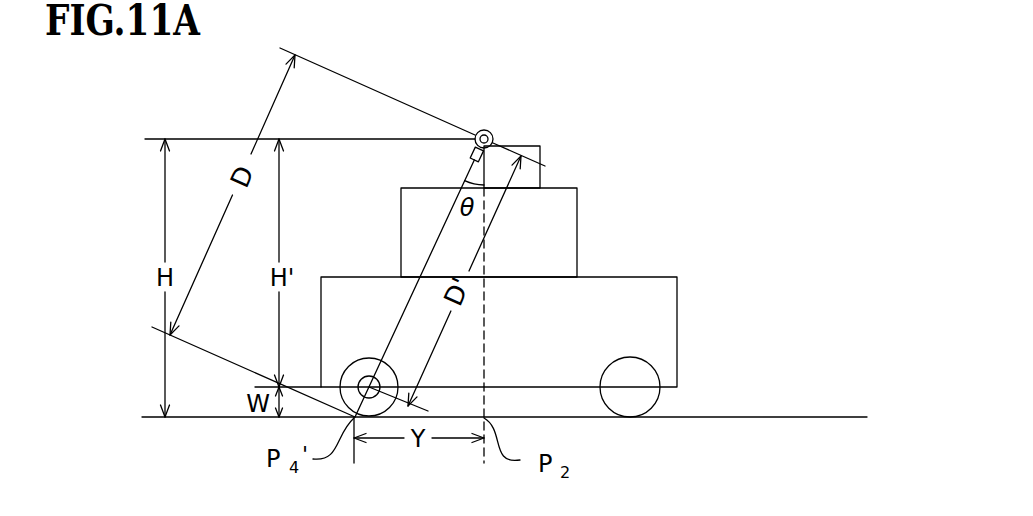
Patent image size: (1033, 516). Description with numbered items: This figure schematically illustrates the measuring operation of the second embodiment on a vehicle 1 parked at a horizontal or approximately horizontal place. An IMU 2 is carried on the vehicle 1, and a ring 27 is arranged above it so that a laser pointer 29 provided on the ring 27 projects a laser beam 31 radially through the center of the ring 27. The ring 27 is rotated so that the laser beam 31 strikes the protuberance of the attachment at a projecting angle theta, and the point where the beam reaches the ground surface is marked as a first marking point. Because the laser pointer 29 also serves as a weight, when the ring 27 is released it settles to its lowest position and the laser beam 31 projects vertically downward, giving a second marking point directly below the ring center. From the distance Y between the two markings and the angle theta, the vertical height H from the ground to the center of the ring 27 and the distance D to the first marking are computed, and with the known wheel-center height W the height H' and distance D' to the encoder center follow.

The vehicle 1 is at (632, 277).
The IMU 2 is at (540, 157).
The ring 27 is at (493, 133).
The laser pointer 29 is at (468, 152).
The laser beam 31 is at (402, 310).